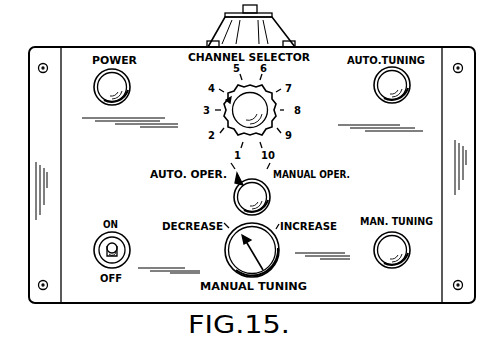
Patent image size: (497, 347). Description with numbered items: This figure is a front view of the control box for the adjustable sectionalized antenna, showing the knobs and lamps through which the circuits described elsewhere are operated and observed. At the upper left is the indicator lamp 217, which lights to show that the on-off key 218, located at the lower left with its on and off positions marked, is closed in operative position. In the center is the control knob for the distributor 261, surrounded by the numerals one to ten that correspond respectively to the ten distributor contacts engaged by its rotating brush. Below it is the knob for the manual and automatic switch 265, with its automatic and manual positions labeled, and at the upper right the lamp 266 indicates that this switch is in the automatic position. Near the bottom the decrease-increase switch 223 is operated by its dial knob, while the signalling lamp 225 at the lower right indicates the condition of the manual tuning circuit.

The indicator lamp 217 is at (120, 83).
The distributor 261 is at (283, 102).
The lamp 266 is at (383, 83).
The manual and automatic switch 265 is at (260, 193).
The decrease-increase switch 223 is at (268, 248).
The on-off key 218 is at (122, 249).
The signalling lamp 225 is at (382, 249).